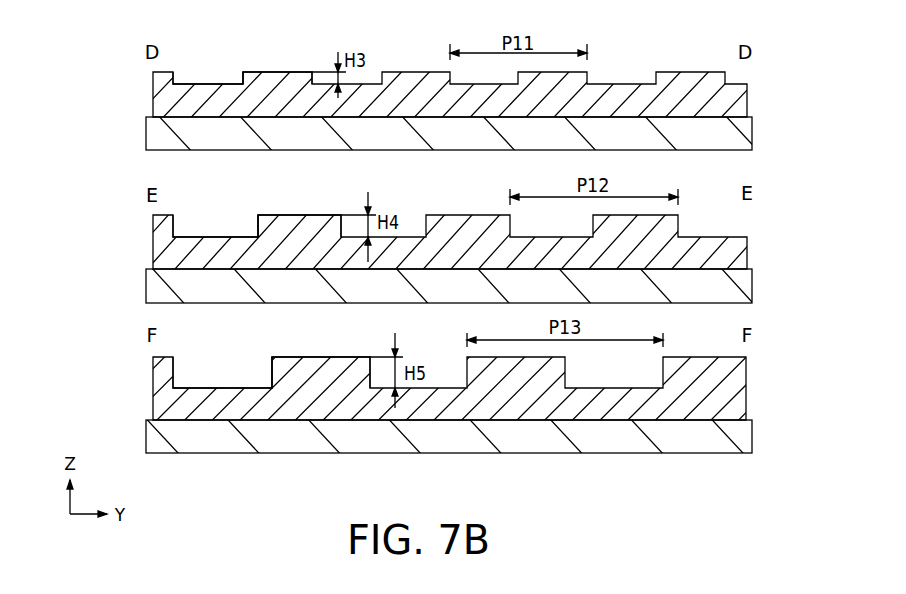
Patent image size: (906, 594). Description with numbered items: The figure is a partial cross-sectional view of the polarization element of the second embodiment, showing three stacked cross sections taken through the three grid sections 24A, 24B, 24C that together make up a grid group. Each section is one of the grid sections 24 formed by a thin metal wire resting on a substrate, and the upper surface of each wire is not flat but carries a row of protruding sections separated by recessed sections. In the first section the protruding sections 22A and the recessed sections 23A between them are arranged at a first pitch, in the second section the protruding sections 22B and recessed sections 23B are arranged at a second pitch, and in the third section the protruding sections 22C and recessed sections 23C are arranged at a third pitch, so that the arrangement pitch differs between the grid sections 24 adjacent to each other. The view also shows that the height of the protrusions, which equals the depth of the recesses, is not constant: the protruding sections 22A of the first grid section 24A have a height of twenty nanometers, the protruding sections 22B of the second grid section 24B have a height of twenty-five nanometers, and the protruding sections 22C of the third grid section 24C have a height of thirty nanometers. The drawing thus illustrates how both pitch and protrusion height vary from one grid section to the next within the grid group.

The grid section 24 is at (424, 72).
The grid section 24A is at (153, 94).
The protruding sections 22A is at (277, 71).
The recessed sections 23A is at (207, 83).
The grid section 24B is at (153, 248).
The protruding sections 22B is at (303, 214).
The recessed sections 23B is at (213, 236).
The grid section 24C is at (153, 402).
The protruding sections 22C is at (317, 356).
The recessed sections 23C is at (215, 387).